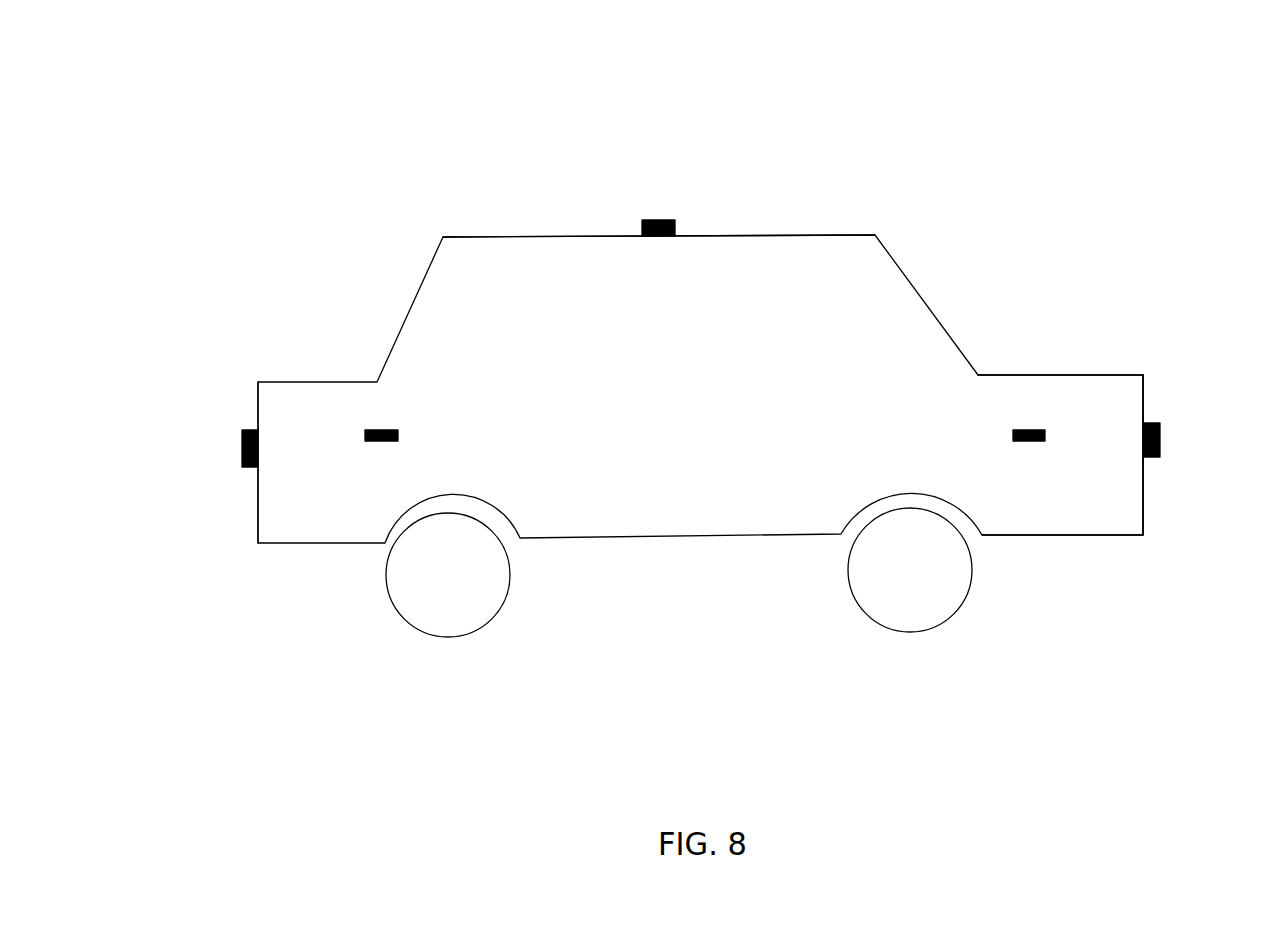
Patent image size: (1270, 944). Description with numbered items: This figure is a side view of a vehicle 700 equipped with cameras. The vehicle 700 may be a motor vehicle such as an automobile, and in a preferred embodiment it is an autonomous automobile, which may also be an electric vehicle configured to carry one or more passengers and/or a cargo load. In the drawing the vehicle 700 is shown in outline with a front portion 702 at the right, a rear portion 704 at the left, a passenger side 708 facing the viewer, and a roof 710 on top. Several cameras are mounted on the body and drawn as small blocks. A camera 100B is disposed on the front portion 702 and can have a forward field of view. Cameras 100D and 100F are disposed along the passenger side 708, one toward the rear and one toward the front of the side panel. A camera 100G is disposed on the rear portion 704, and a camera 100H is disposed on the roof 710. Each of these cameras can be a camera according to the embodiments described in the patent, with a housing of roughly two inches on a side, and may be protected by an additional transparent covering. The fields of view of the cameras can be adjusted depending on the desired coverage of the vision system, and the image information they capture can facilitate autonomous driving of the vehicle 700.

The vehicle 700 is at (1020, 79).
The front portion 702 is at (1143, 398).
The rear portion 704 is at (257, 403).
The passenger side 708 is at (972, 485).
The roof 710 is at (833, 235).
The camera 100B is at (1160, 427).
The camera 100D is at (1015, 430).
The camera 100F is at (385, 428).
The camera 100G is at (242, 452).
The camera 100H is at (650, 220).